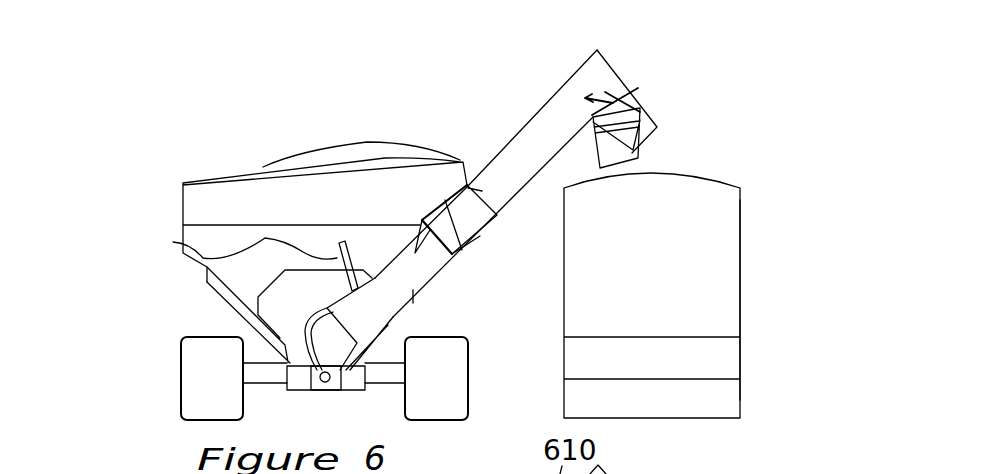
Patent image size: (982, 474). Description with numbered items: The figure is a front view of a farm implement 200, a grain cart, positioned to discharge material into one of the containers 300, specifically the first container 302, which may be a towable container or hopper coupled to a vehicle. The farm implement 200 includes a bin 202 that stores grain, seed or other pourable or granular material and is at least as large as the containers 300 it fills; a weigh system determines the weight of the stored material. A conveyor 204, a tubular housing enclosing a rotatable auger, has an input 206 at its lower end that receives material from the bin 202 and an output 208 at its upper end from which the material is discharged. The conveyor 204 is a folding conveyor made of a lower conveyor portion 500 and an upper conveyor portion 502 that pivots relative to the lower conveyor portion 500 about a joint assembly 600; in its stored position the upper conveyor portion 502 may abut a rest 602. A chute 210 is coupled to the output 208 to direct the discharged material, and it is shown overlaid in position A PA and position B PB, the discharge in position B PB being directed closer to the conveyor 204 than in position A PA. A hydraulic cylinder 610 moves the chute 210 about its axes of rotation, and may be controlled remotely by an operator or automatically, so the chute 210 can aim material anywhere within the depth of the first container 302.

The farm implement 200 is at (100, 196).
The bin 202 is at (226, 186).
The conveyor 204 is at (500, 155).
The input 206 is at (313, 337).
The output 208 is at (557, 93).
The chute 210 is at (587, 73).
The containers 300 is at (808, 186).
The first container 302 is at (737, 296).
The lower conveyor portion 500 is at (413, 303).
The upper conveyor portion 502 is at (465, 185).
The joint assembly 600 is at (452, 254).
The rest 602 is at (173, 242).
The hydraulic cylinder 610 is at (610, 78).
The position A PA is at (650, 118).
The position B PB is at (640, 159).